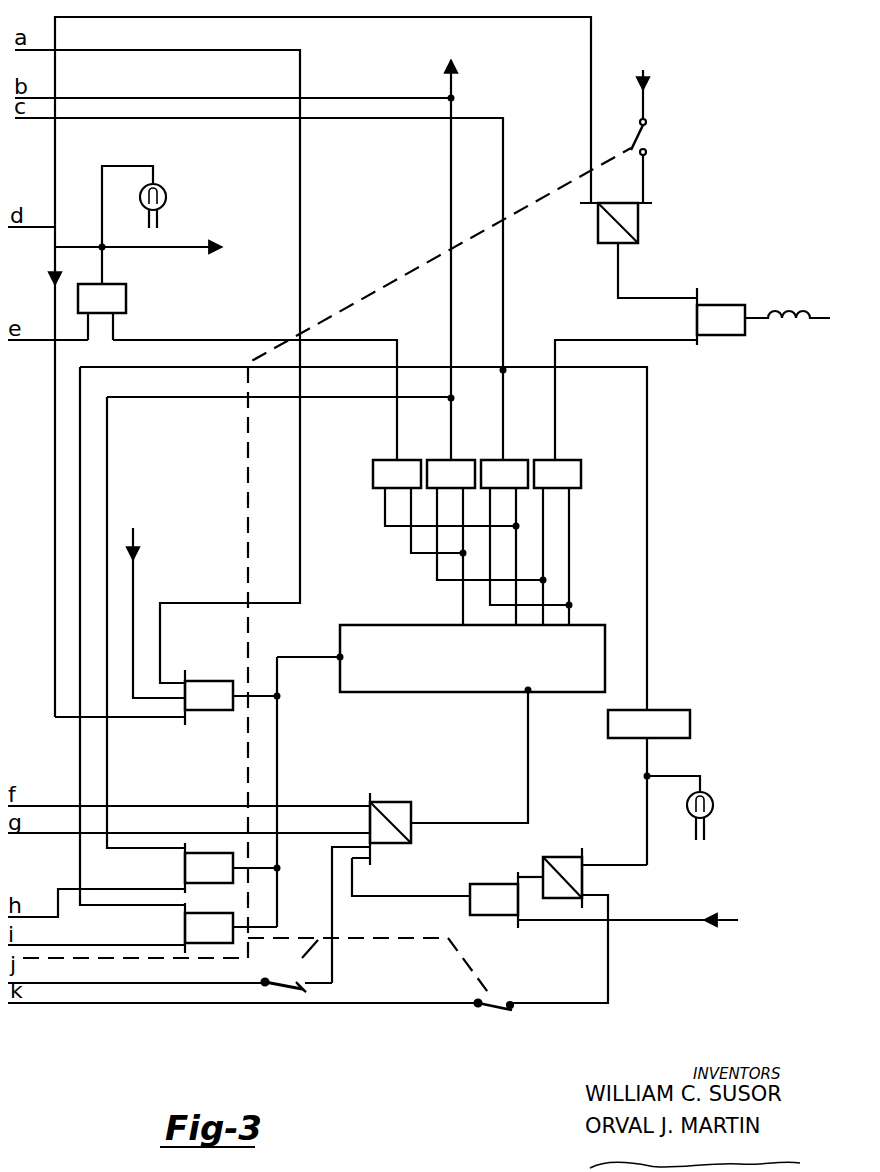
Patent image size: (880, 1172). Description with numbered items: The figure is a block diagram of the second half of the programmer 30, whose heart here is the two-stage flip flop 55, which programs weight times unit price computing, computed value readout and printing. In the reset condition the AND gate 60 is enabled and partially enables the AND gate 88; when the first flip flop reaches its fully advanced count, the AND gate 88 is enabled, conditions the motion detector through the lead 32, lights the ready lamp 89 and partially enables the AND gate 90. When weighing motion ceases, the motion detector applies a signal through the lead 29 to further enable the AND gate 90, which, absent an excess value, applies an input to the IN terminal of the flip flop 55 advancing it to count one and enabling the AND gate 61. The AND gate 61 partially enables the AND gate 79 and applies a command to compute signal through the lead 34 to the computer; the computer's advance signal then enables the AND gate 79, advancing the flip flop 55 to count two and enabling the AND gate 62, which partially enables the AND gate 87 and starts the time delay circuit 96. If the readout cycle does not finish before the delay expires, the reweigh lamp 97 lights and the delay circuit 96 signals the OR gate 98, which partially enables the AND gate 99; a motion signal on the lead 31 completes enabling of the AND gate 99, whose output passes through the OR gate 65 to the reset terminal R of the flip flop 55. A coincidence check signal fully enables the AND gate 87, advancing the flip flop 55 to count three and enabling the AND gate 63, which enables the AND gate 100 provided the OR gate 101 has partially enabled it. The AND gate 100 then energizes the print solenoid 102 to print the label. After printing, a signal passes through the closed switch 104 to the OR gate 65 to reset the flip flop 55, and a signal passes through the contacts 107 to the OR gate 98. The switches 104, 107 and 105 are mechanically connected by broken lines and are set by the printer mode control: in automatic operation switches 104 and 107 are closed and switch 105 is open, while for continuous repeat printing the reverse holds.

The lead 29 is at (134, 592).
The programmer 30 is at (316, 1015).
The lead 31 is at (671, 920).
The lead 32 is at (152, 250).
The lead 34 is at (455, 78).
The two-stage flip flop 55 is at (384, 625).
The AND gate 60 is at (381, 460).
The AND gate 61 is at (434, 460).
The AND gate 62 is at (489, 460).
The AND gate 63 is at (541, 460).
The OR gate 65 is at (393, 800).
The AND gate 79 is at (183, 866).
The AND gate 87 is at (183, 926).
The AND gate 88 is at (124, 290).
The ready lamp 89 is at (163, 193).
The AND gate 90 is at (207, 681).
The time delay circuit 96 is at (677, 710).
The reweigh lamp 97 is at (712, 800).
The OR gate 98 is at (568, 850).
The AND gate 99 is at (484, 884).
The AND gate 100 is at (722, 335).
The OR gate 101 is at (597, 230).
The print solenoid 102 is at (789, 320).
The switch 104 is at (292, 984).
The switch 105 is at (646, 135).
The switch 107 is at (504, 1003).